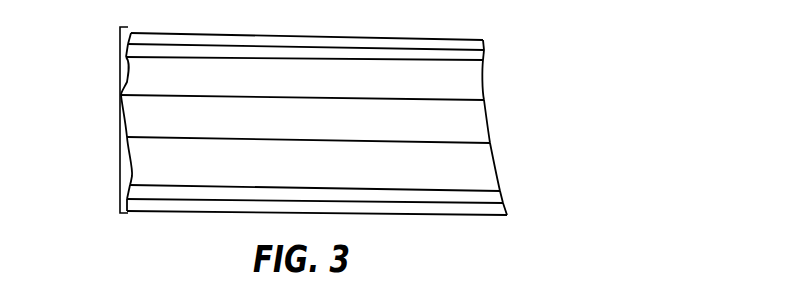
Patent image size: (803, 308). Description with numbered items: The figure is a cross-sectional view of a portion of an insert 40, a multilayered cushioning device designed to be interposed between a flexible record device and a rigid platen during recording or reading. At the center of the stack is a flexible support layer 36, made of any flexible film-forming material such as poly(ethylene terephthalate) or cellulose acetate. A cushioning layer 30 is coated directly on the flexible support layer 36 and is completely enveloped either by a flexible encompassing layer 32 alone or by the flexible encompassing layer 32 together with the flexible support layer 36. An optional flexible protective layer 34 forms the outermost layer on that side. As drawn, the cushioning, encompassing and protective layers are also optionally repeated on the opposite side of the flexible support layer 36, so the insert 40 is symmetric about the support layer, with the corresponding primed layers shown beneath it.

The insert 40 is at (130, 138).
The flexible protective layer 34 is at (477, 46).
The flexible encompassing layer 32 is at (477, 58).
The cushioning layer 30 is at (471, 83).
The flexible support layer 36 is at (478, 131).